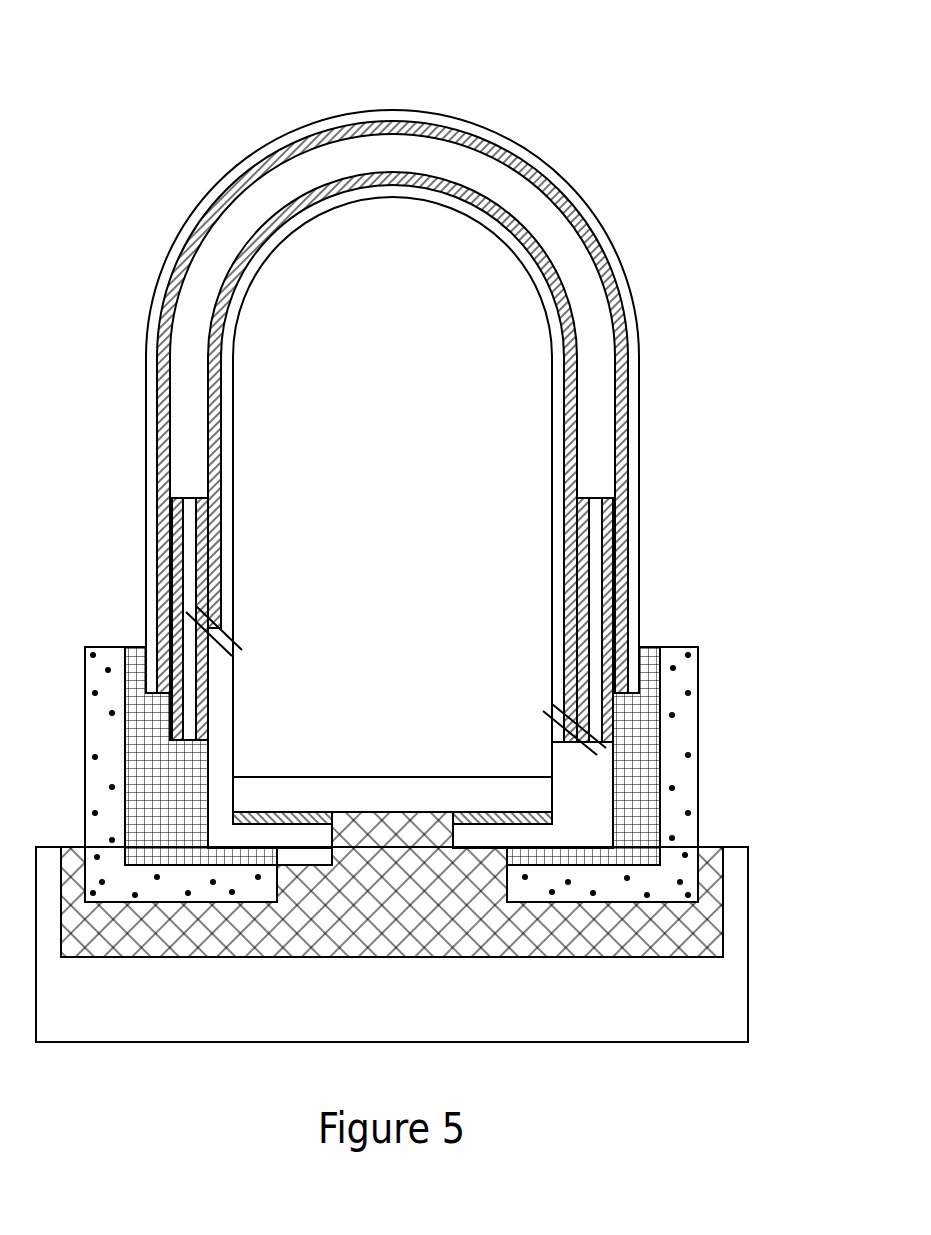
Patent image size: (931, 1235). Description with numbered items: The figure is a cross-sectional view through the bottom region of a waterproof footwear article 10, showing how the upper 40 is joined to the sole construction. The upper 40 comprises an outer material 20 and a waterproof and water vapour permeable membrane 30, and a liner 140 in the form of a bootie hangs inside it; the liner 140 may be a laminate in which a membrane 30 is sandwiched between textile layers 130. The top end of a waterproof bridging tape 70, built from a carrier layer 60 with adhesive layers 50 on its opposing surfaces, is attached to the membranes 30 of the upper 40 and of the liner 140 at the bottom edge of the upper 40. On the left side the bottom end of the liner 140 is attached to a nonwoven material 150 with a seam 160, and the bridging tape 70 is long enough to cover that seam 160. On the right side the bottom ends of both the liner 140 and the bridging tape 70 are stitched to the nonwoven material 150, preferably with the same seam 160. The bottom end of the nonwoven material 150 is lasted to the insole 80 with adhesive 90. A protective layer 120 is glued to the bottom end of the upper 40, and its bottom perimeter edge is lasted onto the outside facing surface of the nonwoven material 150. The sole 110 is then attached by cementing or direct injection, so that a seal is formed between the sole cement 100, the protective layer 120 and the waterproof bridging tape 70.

The footwear article 10 is at (742, 66).
The outer material 20 is at (615, 302).
The waterproof and water vapour permeable membrane 30 is at (625, 342).
The upper 40 is at (718, 262).
The adhesive layer 50 is at (200, 523).
The carrier layer 60 is at (190, 558).
The waterproof bridging tape 70 is at (292, 485).
The insole 80 is at (302, 797).
The adhesive 90 is at (257, 815).
The sole cement 100 is at (650, 687).
The sole 110 is at (712, 990).
The protective layer 120 is at (682, 772).
The textile layer 130 is at (232, 357).
The liner 140 is at (338, 283).
The nonwoven material 150 is at (220, 707).
The seam 160 is at (235, 637).